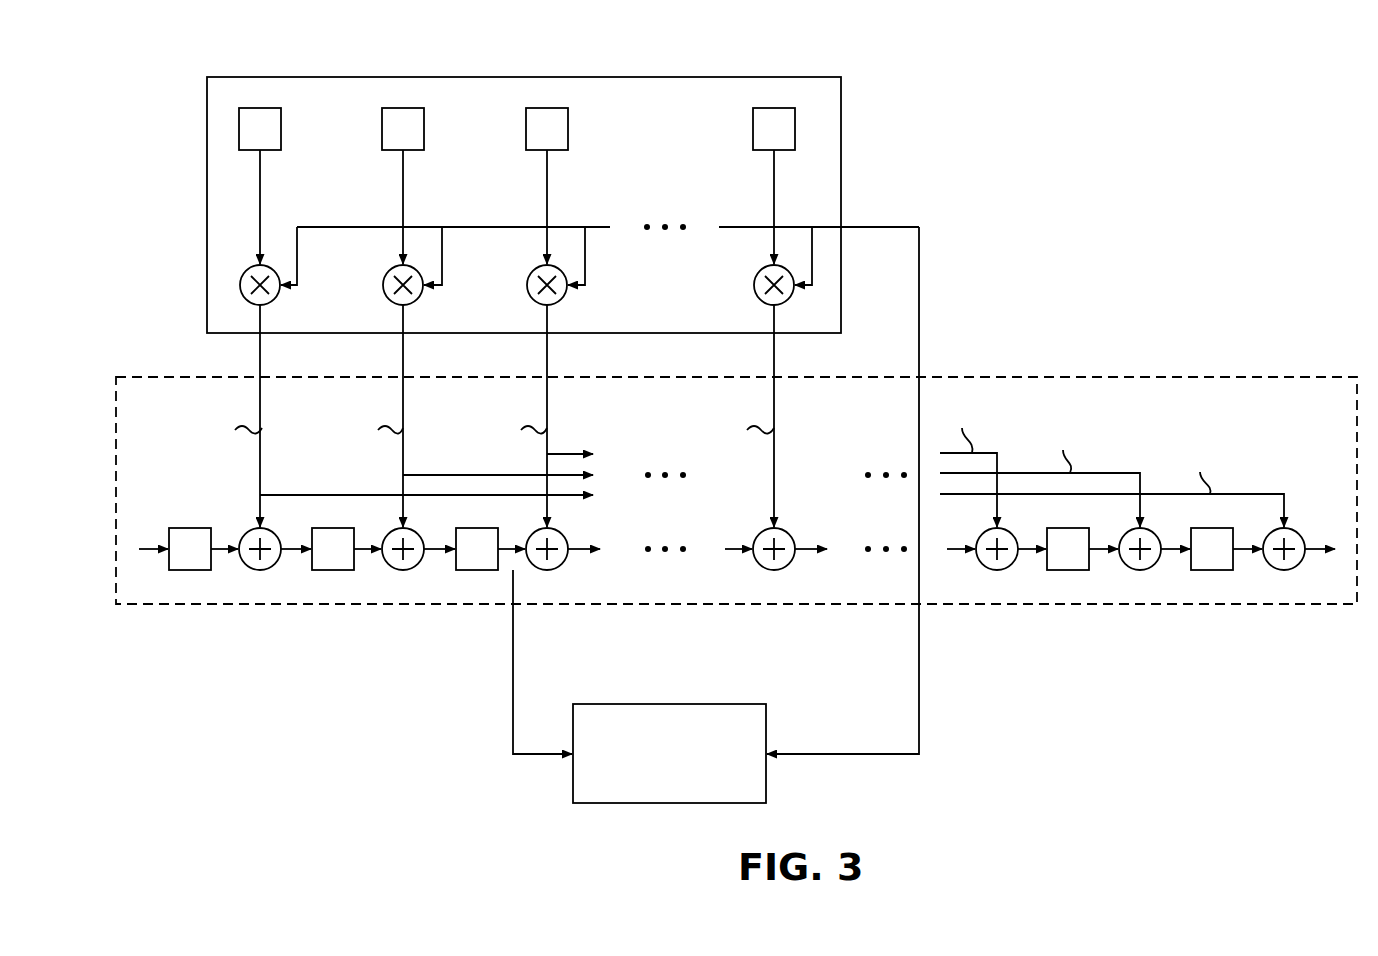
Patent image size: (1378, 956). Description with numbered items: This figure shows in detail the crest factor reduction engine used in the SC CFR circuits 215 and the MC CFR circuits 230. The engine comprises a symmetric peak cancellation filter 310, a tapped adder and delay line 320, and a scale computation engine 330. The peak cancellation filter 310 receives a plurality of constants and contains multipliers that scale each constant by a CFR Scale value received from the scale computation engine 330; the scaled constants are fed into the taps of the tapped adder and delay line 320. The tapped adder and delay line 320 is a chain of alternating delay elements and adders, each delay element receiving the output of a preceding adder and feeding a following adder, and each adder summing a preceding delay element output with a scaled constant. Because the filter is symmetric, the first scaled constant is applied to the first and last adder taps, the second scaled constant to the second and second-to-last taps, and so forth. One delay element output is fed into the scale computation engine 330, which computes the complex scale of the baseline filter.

The symmetric peak cancellation filter 310 is at (523, 77).
The tapped adder and delay line 320 is at (1105, 377).
The scale computation engine 330 is at (668, 704).
The SC CFR circuits 215 is at (1120, 133).
The MC CFR circuits 230 is at (736, 412).